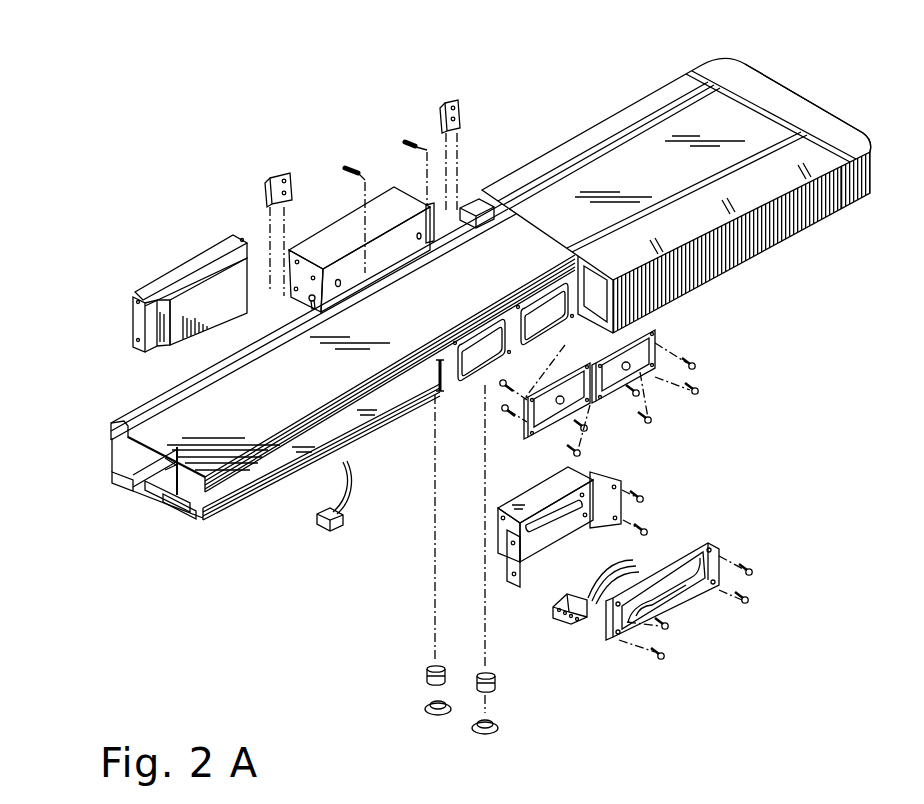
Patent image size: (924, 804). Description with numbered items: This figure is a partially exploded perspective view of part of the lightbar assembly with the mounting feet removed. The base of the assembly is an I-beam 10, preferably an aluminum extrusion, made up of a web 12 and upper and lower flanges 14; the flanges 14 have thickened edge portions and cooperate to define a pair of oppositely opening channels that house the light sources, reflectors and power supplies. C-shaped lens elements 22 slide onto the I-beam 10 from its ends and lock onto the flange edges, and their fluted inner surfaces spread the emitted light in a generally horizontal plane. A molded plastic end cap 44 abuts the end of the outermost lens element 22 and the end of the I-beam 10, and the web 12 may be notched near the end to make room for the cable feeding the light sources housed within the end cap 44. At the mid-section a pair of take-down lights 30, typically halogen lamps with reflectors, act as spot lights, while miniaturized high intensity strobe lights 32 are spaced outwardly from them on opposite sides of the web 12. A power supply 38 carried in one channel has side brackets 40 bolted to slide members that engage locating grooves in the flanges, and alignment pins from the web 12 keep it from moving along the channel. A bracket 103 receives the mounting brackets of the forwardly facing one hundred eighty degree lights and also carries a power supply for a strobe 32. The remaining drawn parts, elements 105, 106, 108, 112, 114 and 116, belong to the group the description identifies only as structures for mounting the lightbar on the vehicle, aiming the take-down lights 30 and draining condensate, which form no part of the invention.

The I-beam 10 is at (434, 318).
The web 12 is at (200, 490).
The upper and lower flanges 14 is at (137, 441).
The lens element 22 is at (643, 99).
The end cap 44 is at (871, 176).
The power supply 38 is at (339, 226).
The side brackets 40 is at (265, 184).
The strobe lights 32 is at (166, 269).
The take-down lights 30 is at (658, 334).
The undescribed structure 106 is at (698, 390).
The undescribed structure 112 is at (507, 412).
The undescribed structure 108 is at (452, 390).
The bracket 103 is at (514, 560).
The undescribed structure 105 is at (646, 528).
The undescribed structure 114 is at (498, 722).
The undescribed structure 116 is at (498, 682).